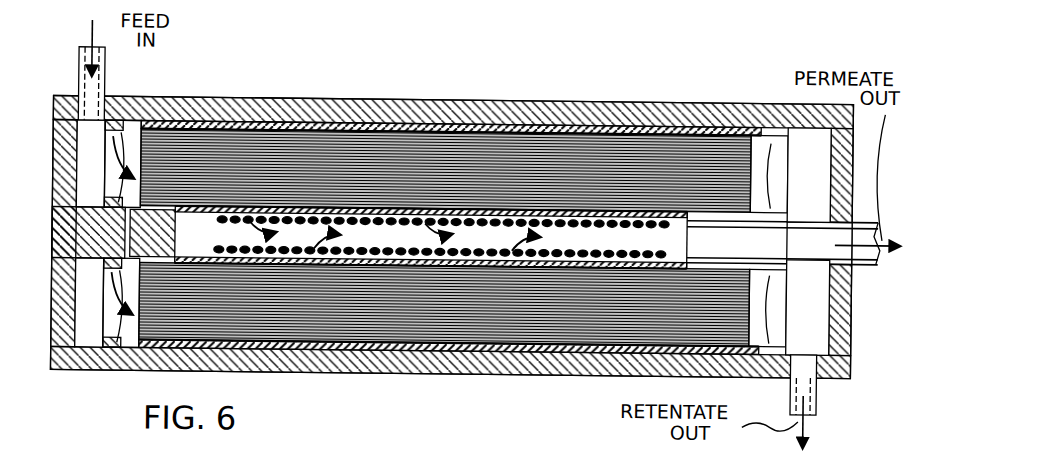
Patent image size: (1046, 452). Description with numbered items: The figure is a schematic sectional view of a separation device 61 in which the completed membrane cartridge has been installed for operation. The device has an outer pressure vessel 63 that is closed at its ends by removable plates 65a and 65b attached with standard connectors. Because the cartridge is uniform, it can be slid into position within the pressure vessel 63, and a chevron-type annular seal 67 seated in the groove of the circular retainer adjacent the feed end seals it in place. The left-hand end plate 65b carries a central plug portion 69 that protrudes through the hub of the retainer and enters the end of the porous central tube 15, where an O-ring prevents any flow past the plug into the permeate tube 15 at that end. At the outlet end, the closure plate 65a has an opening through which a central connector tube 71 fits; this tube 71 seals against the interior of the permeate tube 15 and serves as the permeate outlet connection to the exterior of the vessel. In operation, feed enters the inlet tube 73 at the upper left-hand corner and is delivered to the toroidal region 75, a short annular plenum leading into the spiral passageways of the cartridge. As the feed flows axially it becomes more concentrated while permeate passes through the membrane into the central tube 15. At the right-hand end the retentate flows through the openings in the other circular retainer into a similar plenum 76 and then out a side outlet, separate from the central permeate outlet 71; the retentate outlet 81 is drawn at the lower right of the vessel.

The separation device 61 is at (446, 94).
The outer pressure vessel 63 is at (297, 112).
The removable plate 65a is at (851, 322).
The removable plate 65b is at (52, 372).
The chevron-type annular seal 67 is at (118, 126).
The central plug portion 69 is at (175, 232).
The central connector tube 71 is at (758, 252).
The inlet tube 73 is at (104, 74).
The toroidal region 75 is at (99, 202).
The plenum 76 is at (818, 154).
The porous central tube 15 is at (672, 250).
The retentate outlet 81 is at (535, 451).